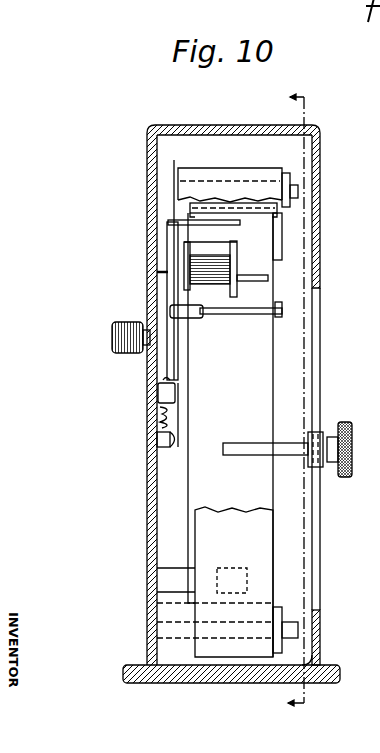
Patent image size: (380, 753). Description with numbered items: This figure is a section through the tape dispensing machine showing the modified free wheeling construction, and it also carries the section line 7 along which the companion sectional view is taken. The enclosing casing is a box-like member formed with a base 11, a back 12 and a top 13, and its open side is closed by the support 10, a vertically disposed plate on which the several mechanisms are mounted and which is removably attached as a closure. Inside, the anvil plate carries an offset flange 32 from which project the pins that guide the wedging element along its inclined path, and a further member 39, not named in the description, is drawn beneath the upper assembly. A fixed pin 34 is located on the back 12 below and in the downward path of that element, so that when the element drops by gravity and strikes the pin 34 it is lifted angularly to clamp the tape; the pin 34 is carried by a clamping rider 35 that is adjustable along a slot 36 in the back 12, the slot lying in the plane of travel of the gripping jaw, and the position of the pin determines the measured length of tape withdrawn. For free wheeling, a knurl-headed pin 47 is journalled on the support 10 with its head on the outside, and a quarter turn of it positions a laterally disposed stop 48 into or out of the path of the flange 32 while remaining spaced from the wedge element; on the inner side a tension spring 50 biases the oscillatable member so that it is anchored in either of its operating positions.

The section line 7— 7 is at (306, 402).
The support 10 is at (150, 477).
The base 11 is at (207, 673).
The back 12 is at (313, 250).
The top 13 is at (165, 125).
The offset flange 32 is at (187, 247).
The fixed pin 34 is at (237, 452).
The clamping rider 35 is at (328, 433).
The slot 36 is at (312, 356).
The mounting plate 39 is at (273, 213).
The knurl-headed pin 47 is at (135, 343).
The stop 48 is at (190, 313).
The tension spring 50 is at (152, 376).